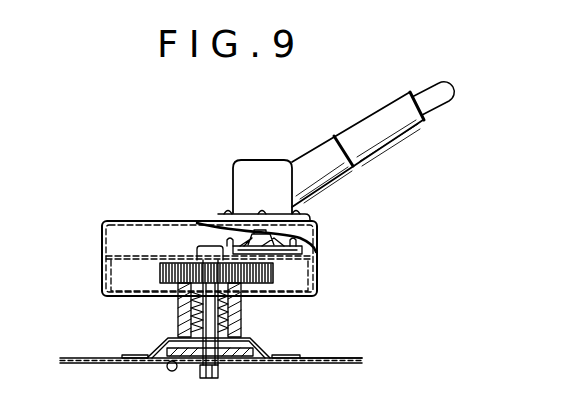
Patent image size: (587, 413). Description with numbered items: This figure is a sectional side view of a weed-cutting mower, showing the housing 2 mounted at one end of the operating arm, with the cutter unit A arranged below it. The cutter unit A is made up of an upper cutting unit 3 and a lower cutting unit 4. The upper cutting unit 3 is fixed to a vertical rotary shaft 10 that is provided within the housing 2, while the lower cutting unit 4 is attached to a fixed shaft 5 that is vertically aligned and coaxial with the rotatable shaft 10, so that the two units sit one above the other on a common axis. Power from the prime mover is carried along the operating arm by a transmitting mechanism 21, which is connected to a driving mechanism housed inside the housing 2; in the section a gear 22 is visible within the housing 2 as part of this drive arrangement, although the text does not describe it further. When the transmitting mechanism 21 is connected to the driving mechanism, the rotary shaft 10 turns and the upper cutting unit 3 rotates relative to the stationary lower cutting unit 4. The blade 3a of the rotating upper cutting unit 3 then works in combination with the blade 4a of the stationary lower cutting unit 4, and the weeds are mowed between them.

The housing 2 is at (358, 130).
The transmitting mechanism 21 is at (432, 103).
The gear 22 is at (160, 270).
The rotary shaft 10 is at (241, 300).
The fixed shaft 5 is at (190, 316).
The upper cutting unit 3 is at (259, 345).
The blade 3a is at (292, 354).
The lower cutting unit 4 is at (256, 364).
The blade 4a is at (315, 364).
The cutter unit A is at (169, 379).